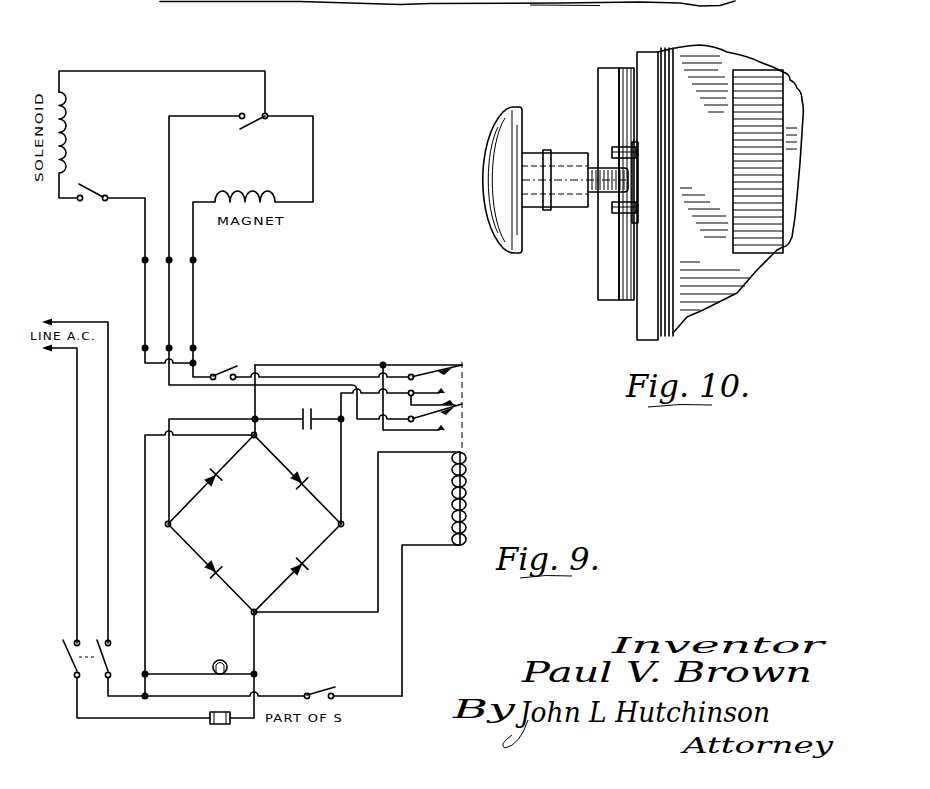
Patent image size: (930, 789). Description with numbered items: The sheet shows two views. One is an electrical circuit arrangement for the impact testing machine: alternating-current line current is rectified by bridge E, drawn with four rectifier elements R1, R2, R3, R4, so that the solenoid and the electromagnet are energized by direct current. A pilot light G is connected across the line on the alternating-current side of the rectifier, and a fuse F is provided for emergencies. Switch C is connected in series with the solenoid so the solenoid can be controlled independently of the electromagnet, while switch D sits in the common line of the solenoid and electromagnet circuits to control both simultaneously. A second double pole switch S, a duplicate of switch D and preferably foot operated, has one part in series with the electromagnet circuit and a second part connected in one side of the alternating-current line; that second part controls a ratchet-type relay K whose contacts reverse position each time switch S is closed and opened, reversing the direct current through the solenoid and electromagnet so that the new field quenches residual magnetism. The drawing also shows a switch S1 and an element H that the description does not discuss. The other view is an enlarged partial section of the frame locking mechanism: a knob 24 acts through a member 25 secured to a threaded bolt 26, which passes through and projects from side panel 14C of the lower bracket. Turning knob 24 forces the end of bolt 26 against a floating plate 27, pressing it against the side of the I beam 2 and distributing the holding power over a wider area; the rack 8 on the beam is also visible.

In FIG. 10, the I beam 2 is at (722, 62).
In FIG. 10, the rack 8 is at (773, 118).
In FIG. 10, the side panel 14C is at (611, 68).
In FIG. 10, the knob 24 is at (497, 143).
In FIG. 10, the shaft 25 is at (532, 155).
In FIG. 10, the threaded bolt 26 is at (597, 172).
In FIG. 10, the floating plate 27 is at (637, 163).
In FIG. 9, the switch C is at (92, 208).
In FIG. 9, the switch D is at (252, 109).
In FIG. 9, the double pole switch S is at (223, 365).
In FIG. 9, the double pole switch S1 is at (73, 659).
In FIG. 9, the capacitor H is at (289, 456).
In FIG. 9, the bridge E is at (254, 523).
In FIG. 9, the rectifier R1 is at (215, 488).
In FIG. 9, the rectifier R2 is at (294, 492).
In FIG. 9, the rectifier R3 is at (220, 567).
In FIG. 9, the rectifier R4 is at (295, 560).
In FIG. 9, the pilot light G is at (199, 662).
In FIG. 9, the fuse F is at (165, 717).
In FIG. 9, the ratchet-type relay K is at (376, 529).